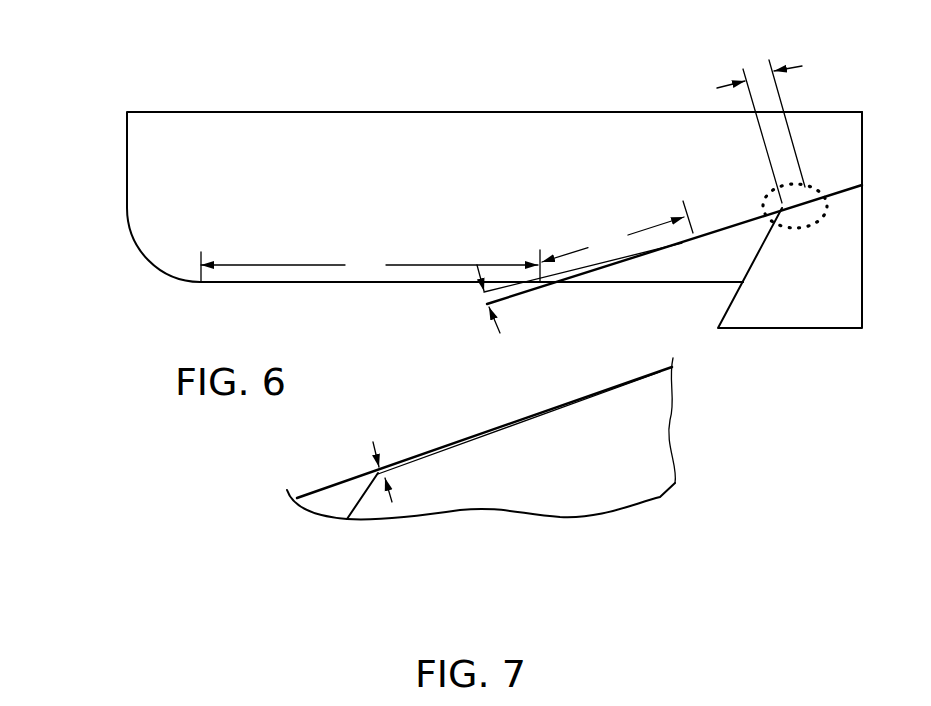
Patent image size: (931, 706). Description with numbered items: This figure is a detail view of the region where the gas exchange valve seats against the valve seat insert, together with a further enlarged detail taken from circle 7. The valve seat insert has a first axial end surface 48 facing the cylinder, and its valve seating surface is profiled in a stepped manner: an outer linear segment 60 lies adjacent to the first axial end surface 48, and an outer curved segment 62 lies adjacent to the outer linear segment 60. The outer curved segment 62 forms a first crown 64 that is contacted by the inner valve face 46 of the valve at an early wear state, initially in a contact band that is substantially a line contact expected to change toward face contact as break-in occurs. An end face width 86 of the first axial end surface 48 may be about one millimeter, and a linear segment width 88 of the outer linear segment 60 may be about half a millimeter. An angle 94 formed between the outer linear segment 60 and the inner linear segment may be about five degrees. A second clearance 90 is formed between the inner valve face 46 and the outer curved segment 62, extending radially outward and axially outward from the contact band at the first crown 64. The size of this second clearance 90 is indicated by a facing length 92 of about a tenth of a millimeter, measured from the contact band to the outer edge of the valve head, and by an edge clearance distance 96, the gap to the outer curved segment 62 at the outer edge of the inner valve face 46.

In FIG. 6, the first axial end surface 48 is at (258, 285).
In FIG. 6, the inner valve face 46 is at (848, 184).
In FIG. 6, the outer linear segment 60 is at (627, 259).
In FIG. 6, the outer curved segment 62 is at (737, 227).
In FIG. 6, the end face width 86 is at (370, 266).
In FIG. 6, the linear segment width 88 is at (617, 231).
In FIG. 6, the angle 94 is at (493, 300).
In FIG. 6, the facing length 92 is at (757, 68).
In FIG. 6, the circle 7 is at (830, 205).
In FIG. 6, the second clearance 90 is at (794, 193).
In FIG. 7, the second clearance 90 is at (423, 462).
In FIG. 6, the first crown 64 is at (816, 200).
In FIG. 7, the edge clearance distance 96 is at (374, 441).